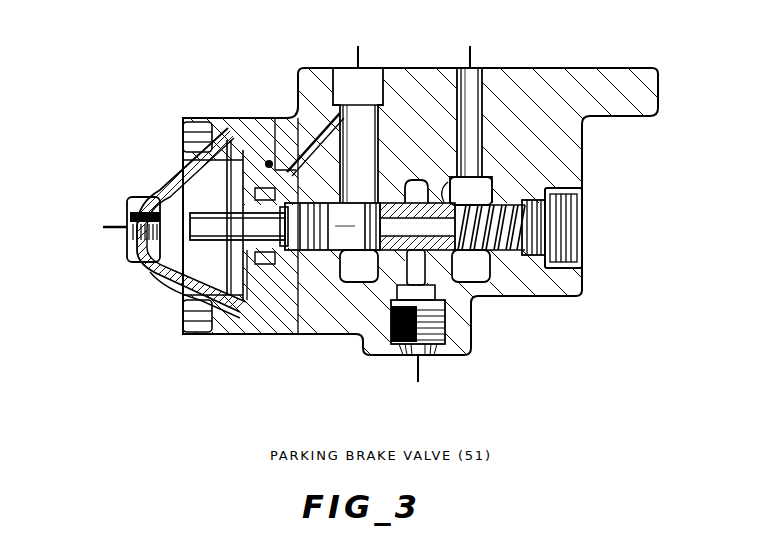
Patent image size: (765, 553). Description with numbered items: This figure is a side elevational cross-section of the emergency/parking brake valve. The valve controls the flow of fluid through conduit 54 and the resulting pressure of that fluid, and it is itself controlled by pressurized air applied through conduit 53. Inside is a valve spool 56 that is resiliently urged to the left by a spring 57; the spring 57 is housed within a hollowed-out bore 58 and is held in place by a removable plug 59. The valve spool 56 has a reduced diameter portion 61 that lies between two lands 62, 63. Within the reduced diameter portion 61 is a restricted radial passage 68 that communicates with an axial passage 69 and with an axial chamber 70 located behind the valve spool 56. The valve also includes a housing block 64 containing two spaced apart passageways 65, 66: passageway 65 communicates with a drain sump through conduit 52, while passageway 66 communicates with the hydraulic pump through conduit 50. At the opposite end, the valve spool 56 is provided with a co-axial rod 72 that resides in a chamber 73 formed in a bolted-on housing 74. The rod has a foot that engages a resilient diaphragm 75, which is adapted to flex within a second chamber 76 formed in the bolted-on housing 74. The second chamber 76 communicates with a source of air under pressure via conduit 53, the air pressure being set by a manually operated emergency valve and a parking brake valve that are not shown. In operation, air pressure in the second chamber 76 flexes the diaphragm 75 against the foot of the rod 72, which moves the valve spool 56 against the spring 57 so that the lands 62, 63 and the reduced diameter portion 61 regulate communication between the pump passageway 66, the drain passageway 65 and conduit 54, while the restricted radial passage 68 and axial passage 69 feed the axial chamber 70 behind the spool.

The conduit 50 is at (476, 60).
The conduit 52 is at (354, 58).
The conduit 53 is at (115, 223).
The conduit 54 is at (416, 368).
The valve spool 56 is at (450, 198).
The spring 57 is at (537, 278).
The hollowed-out bore 58 is at (497, 276).
The removable plug 59 is at (585, 223).
The reduced diameter portion 61 is at (402, 185).
The land 62 is at (306, 292).
The land 63 is at (482, 282).
The housing block 64 is at (568, 135).
The passageway 65 is at (366, 136).
The passageway 66 is at (480, 136).
The restricted radial passage 68 is at (387, 206).
The axial passage 69 is at (370, 293).
The axial chamber 70 is at (484, 198).
The co-axial rod 72 is at (239, 226).
The chamber 73 is at (218, 190).
The bolted-on housing 74 is at (212, 345).
The resilient diaphragm 75 is at (177, 277).
The second chamber 76 is at (152, 258).